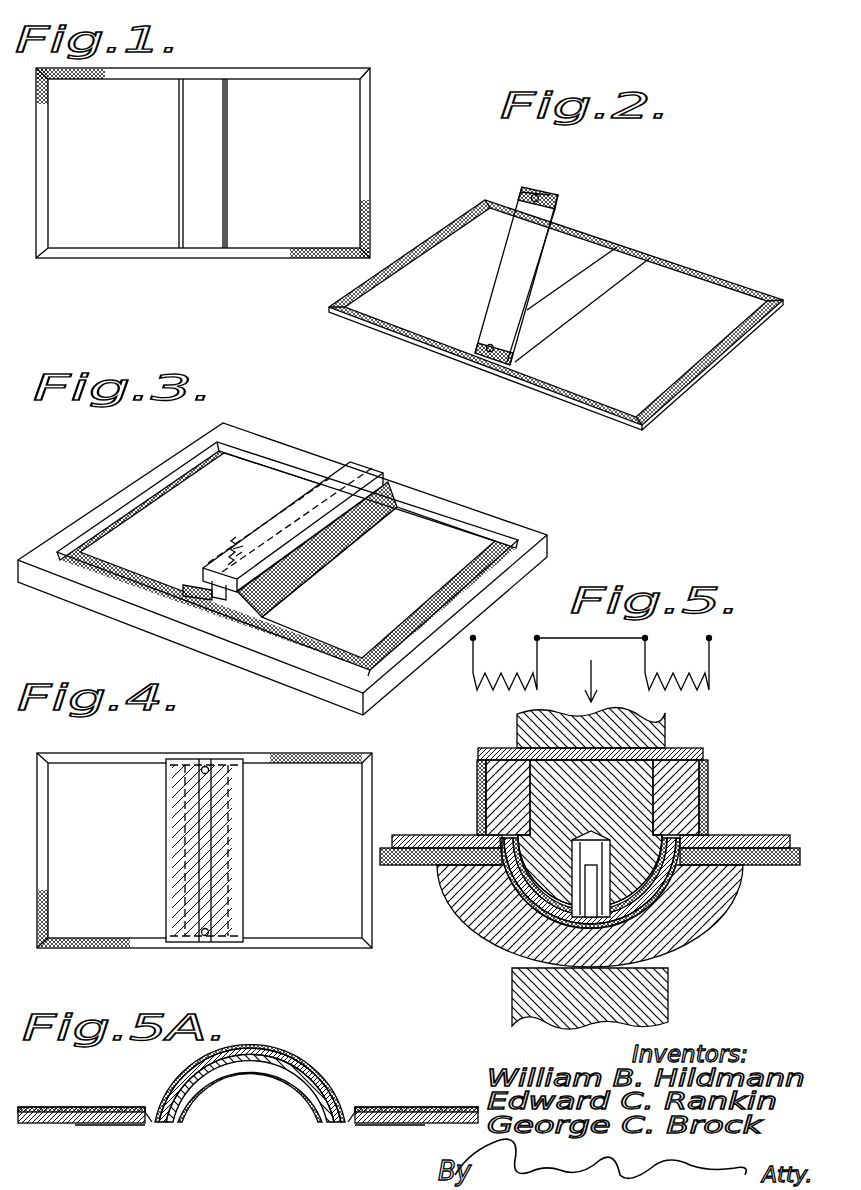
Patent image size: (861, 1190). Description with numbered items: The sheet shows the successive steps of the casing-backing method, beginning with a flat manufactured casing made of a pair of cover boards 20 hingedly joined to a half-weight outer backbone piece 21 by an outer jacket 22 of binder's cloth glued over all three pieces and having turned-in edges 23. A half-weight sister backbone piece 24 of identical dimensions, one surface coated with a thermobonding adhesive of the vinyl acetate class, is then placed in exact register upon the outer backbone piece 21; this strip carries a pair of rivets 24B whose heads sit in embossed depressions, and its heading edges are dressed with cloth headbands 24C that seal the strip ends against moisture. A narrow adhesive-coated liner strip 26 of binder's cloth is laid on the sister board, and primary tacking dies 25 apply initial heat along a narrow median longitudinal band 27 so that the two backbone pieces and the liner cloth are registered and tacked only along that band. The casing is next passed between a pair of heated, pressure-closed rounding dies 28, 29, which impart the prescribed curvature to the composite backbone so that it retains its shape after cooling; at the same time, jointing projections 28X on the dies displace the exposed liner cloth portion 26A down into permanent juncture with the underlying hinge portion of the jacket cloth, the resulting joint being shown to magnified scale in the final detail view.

In FIG. 1, the cover boards 20 is at (130, 164).
In FIG. 2, the cover boards 20 is at (492, 282).
In FIG. 3, the cover boards 20 is at (224, 507).
In FIG. 4, the cover boards 20 is at (114, 860).
In FIG. 5A, the cover boards 20 is at (40, 1125).
In FIG. 1, the outer backbone piece 21 is at (216, 151).
In FIG. 2, the outer backbone piece 21 is at (567, 214).
In FIG. 5A, the outer backbone piece 21 is at (318, 1072).
In FIG. 1, the outer jacket 22 is at (228, 78).
In FIG. 1, the turned-in edges 23 is at (340, 72).
In FIG. 2, the sister backbone piece 24 is at (530, 282).
In FIG. 3, the sister backbone piece 24 is at (335, 522).
In FIG. 4, the sister backbone piece 24 is at (228, 815).
In FIG. 5A, the sister backbone piece 24 is at (288, 1062).
In FIG. 2, the rivets 24B is at (530, 195).
In FIG. 5, the rivets 24B is at (612, 872).
In FIG. 2, the headbands 24C is at (552, 219).
In FIG. 3, the primary tacking dies 25 is at (362, 472).
In FIG. 3, the liner strip 26 is at (198, 586).
In FIG. 4, the liner strip 26 is at (240, 892).
In FIG. 5, the liner strip 26 is at (570, 845).
In FIG. 5A, the liner strip 26 is at (262, 1068).
In FIG. 5, the exposed liner cloth portion 26A is at (480, 870).
In FIG. 5A, the exposed liner cloth portion 26A is at (156, 1136).
In FIG. 4, the median longitudinal band 27 is at (212, 790).
In FIG. 5, the rounding die 28 is at (500, 795).
In FIG. 5, the jointing projections 28X is at (482, 832).
In FIG. 5, the rounding die 29 is at (480, 948).